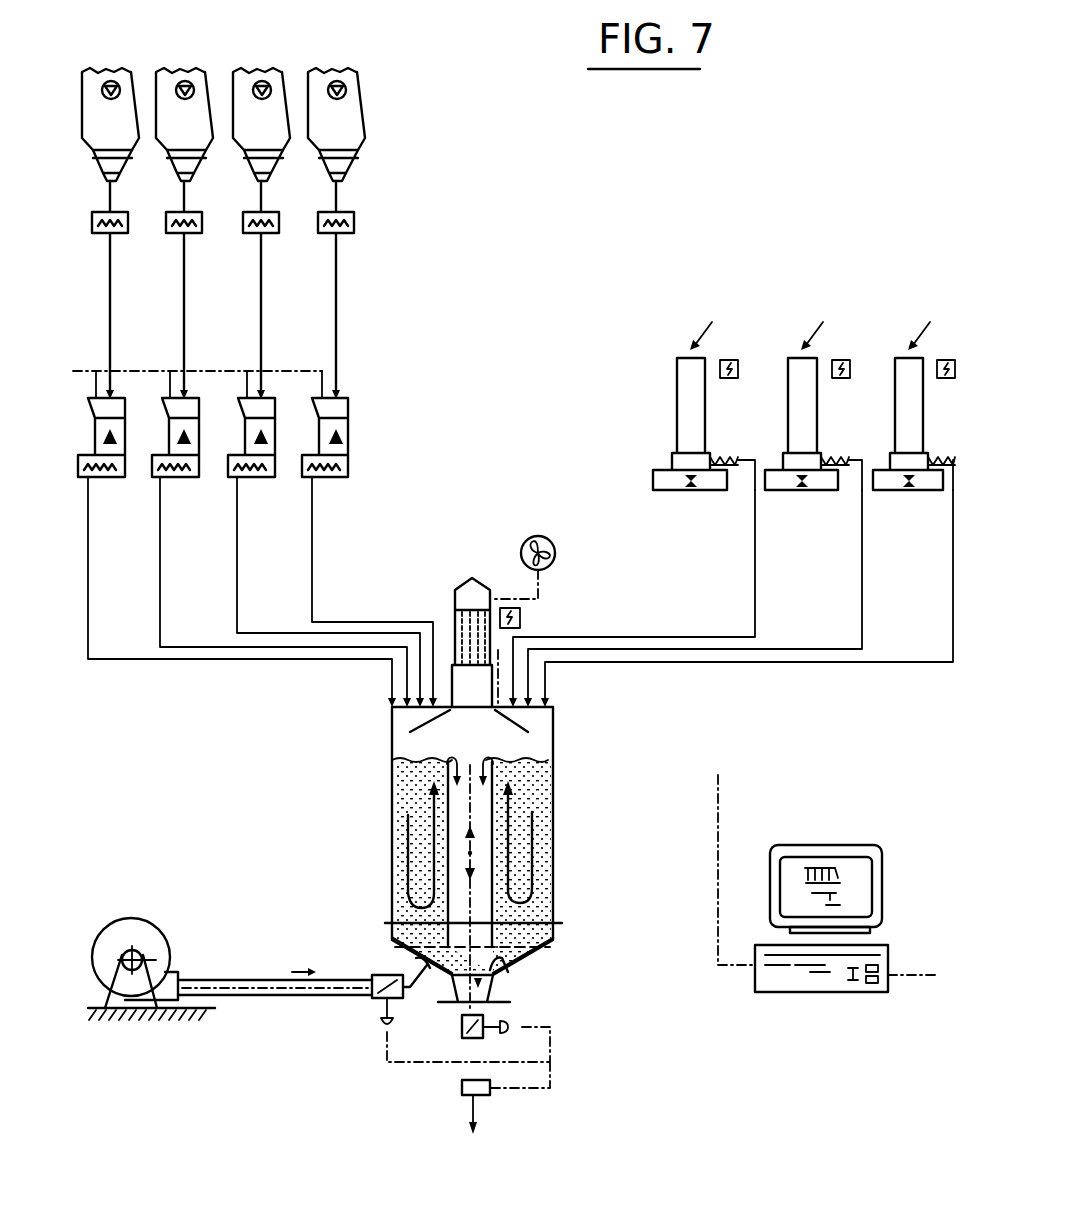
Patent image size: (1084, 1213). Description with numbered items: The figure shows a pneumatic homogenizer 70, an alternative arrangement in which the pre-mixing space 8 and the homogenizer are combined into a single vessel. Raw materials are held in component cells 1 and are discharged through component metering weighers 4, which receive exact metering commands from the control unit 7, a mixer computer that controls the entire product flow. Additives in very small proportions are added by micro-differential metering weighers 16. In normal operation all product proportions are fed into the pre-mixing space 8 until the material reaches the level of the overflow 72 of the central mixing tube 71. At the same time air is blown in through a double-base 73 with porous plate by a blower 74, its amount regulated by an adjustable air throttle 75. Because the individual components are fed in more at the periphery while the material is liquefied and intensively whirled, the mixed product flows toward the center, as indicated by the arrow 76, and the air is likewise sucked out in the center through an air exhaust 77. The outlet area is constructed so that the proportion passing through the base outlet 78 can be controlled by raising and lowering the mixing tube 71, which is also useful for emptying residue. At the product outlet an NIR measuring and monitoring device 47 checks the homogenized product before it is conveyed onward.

The component cell 1 is at (378, 138).
The component metering weigher 4 is at (372, 432).
The control unit 7 is at (853, 845).
The pre-mixing space 8 is at (390, 713).
The micro-differential metering weigher 16 is at (764, 290).
The NIR measuring and monitoring device 47 is at (487, 1082).
The pneumatic homogenizer 70 is at (553, 765).
The mixing tube 71 is at (493, 868).
The overflow 72 is at (477, 753).
The double-base 73 is at (538, 948).
The blower 74 is at (160, 925).
The adjustable air throttle 75 is at (423, 960).
The arrow 76 is at (510, 813).
The air exhaust 77 is at (448, 628).
The base outlet 78 is at (500, 962).